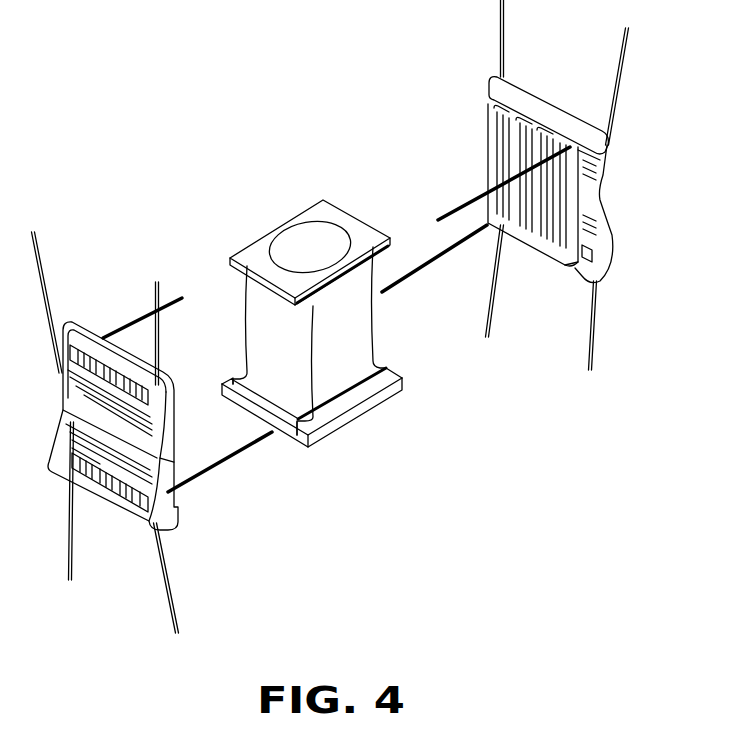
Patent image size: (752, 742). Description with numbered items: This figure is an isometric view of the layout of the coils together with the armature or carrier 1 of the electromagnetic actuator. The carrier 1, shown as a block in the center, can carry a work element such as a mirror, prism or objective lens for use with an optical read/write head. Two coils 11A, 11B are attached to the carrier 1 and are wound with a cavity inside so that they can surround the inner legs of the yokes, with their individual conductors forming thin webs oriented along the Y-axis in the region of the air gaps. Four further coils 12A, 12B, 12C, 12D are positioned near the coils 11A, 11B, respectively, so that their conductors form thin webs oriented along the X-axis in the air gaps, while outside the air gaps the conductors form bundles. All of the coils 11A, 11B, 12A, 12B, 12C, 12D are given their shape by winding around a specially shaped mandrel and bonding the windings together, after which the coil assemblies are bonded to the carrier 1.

The carrier 1 is at (261, 244).
The coil 11A is at (222, 462).
The coil 11B is at (476, 219).
The coil 12A is at (187, 578).
The coil 12B is at (56, 302).
The coil 12C is at (625, 73).
The coil 12D is at (493, 297).